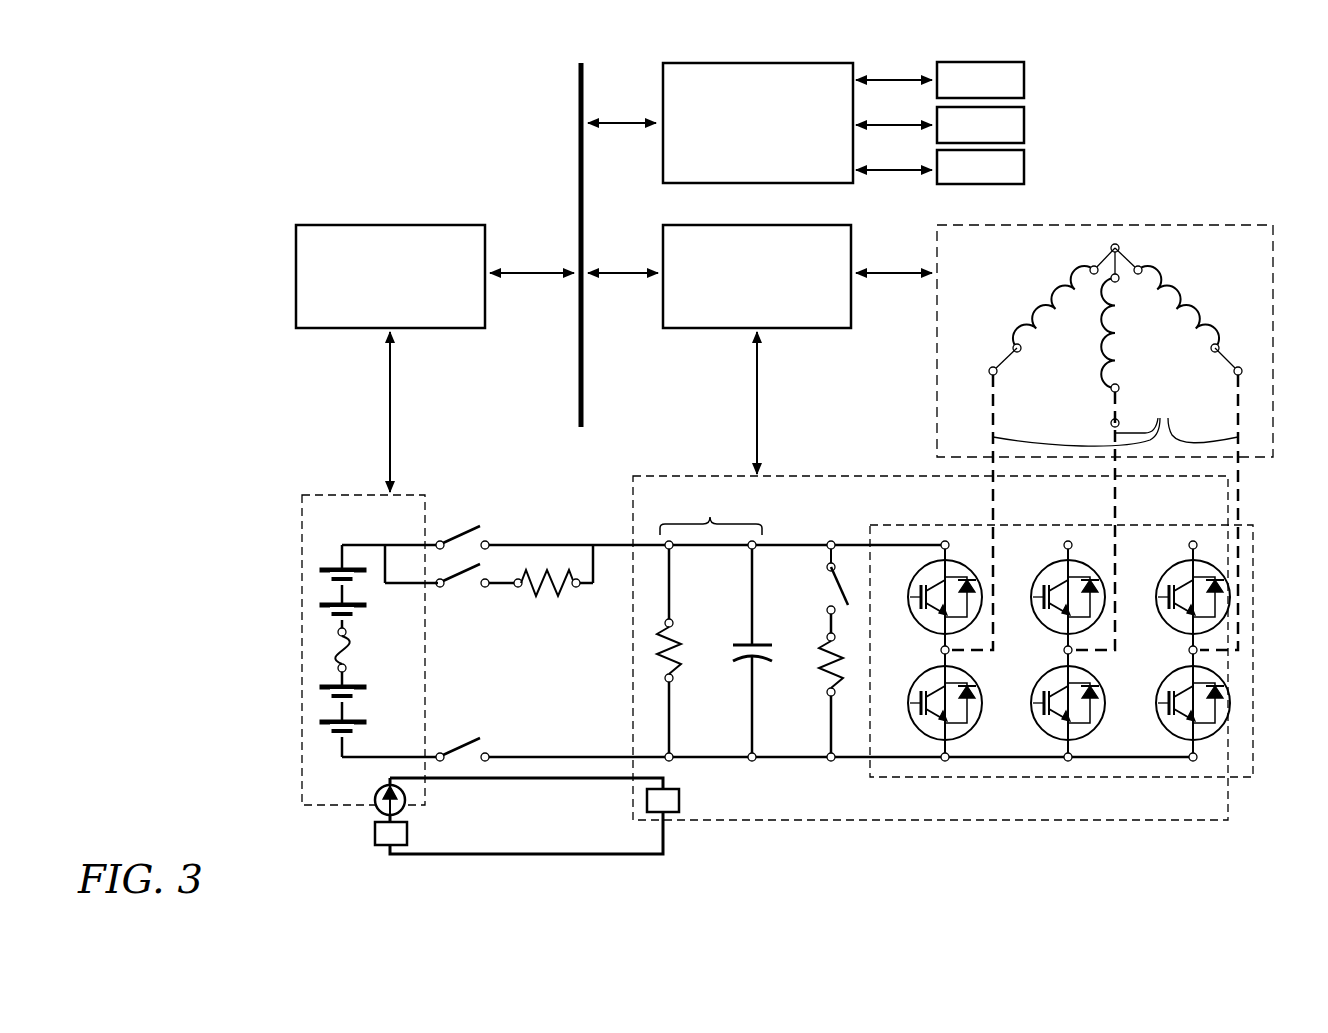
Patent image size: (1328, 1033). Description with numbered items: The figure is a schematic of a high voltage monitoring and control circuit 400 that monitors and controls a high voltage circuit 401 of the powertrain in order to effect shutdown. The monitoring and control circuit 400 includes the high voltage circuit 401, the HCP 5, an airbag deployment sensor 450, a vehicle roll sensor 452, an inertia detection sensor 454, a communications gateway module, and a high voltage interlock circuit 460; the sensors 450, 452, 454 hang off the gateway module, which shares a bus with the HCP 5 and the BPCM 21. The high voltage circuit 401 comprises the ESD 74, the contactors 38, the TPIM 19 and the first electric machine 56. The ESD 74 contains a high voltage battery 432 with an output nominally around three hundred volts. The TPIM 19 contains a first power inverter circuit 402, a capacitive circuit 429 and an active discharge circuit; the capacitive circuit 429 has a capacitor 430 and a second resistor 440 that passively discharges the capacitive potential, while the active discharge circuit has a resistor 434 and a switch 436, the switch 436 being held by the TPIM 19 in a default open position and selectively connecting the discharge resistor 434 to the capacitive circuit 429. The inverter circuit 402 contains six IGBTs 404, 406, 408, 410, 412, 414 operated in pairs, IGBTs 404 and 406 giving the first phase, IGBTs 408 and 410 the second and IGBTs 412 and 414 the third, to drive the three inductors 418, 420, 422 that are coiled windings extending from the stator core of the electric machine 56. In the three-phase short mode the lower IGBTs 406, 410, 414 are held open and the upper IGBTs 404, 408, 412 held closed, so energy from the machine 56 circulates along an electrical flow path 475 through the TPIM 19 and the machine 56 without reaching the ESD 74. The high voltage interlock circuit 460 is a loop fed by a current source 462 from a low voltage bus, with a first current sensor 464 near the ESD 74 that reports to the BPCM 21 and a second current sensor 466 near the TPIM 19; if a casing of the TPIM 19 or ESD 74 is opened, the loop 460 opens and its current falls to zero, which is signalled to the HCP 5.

The high voltage monitoring and control circuit 400 is at (250, 178).
The switch 436 is at (812, 72).
The airbag deployment sensor 450 is at (1015, 80).
The vehicle roll sensor 452 is at (1015, 125).
The inertia detection sensor 454 is at (1015, 170).
The BPCM 21 is at (367, 235).
The HCP 5 is at (845, 243).
The first electric machine 56 is at (1247, 225).
The inductor 418 is at (1044, 283).
The inductor 422 is at (1186, 283).
The inductor 420 is at (1088, 352).
The electrical flow path 475 is at (1115, 422).
The ESD 74 is at (318, 800).
The high voltage battery 432 is at (322, 652).
The contactors 38 is at (465, 530).
The high voltage circuit 401 is at (611, 540).
The TPIM 19 is at (1215, 822).
The capacitive circuit 429 is at (710, 517).
The second resistor 440 is at (650, 665).
The capacitor 430 is at (740, 644).
The resistor 434 is at (819, 682).
The first power inverter circuit 402 is at (870, 779).
The IGBT 404 is at (934, 574).
The IGBT 406 is at (934, 728).
The IGBT 408 is at (1057, 574).
The IGBT 410 is at (1057, 728).
The IGBT 412 is at (1182, 574).
The IGBT 414 is at (1182, 728).
The high voltage interlock circuit 460 is at (428, 858).
The current source 462 is at (408, 800).
The first current sensor 464 is at (372, 832).
The second current sensor 466 is at (682, 802).